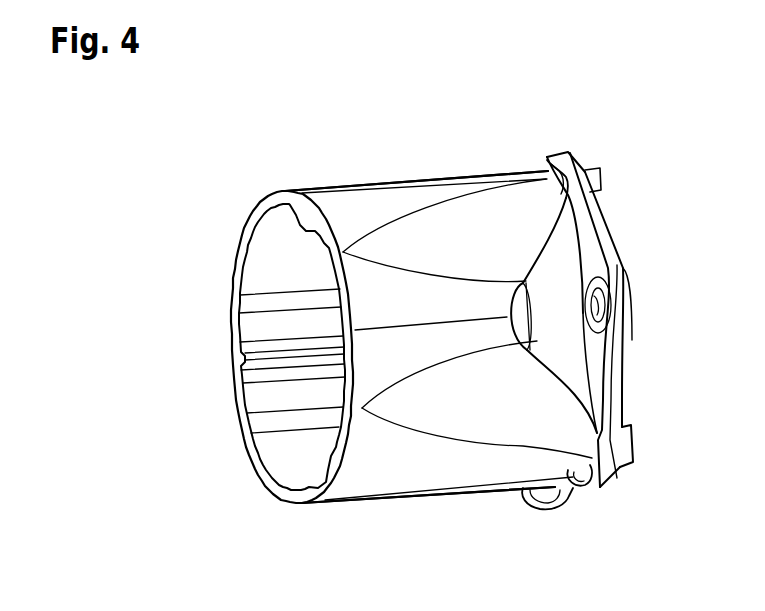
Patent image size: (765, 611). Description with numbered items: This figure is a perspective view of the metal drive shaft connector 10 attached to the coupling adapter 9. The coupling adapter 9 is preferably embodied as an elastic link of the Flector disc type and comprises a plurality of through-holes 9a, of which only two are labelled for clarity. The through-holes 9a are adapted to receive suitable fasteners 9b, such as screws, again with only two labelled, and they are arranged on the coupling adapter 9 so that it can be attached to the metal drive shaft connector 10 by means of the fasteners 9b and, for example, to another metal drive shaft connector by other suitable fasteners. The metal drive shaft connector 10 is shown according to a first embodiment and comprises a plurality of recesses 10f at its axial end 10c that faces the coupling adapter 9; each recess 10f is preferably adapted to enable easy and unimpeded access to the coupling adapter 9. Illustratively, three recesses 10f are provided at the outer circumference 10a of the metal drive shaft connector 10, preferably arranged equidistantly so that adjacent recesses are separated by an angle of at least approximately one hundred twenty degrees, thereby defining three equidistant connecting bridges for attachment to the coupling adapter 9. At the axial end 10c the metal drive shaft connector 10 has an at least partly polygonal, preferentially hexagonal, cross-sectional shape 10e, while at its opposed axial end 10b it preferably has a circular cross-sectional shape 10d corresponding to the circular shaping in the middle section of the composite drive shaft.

The metal drive shaft connector 10 is at (318, 163).
The outer circumference 10a is at (383, 508).
The opposed axial end 10b is at (237, 373).
The axial end 10c is at (581, 245).
The circular cross-sectional shape 10d is at (234, 274).
The hexagonal cross-sectional shape 10e is at (517, 168).
The recess 10f is at (531, 297).
The coupling adapter 9 is at (592, 388).
The through-hole 9a is at (537, 167).
The fastener 9b is at (601, 180).